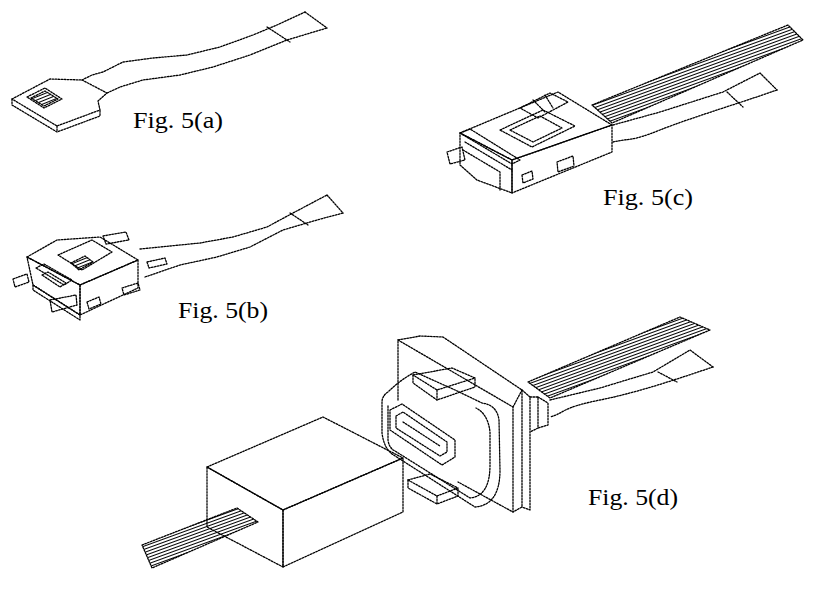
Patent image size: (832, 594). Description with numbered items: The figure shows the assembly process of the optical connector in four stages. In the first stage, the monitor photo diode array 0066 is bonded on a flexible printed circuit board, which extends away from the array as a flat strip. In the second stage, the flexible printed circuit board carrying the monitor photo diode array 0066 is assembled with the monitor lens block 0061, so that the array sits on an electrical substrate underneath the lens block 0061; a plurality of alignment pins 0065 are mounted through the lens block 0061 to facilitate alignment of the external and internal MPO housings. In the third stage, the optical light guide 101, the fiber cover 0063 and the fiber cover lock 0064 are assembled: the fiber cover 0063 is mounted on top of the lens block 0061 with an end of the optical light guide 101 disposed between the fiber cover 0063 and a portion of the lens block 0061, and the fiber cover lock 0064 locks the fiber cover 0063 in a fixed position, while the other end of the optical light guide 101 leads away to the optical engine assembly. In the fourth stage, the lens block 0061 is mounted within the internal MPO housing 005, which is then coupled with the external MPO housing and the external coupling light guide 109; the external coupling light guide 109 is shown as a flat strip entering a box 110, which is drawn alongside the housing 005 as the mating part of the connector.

In FIG. 5A, the monitor photo diode array 0066 is at (40, 103).
In FIG. 5B, the monitor lens block 0061 is at (88, 240).
In FIG. 5B, the alignment pins 0065 is at (60, 297).
In FIG. 5C, the fiber cover lock 0064 is at (557, 112).
In FIG. 5C, the fiber cover 0063 is at (515, 158).
In FIG. 5C, the optical light guide 101 is at (712, 65).
In FIG. 5D, the optical light guide 101 is at (620, 367).
In FIG. 5D, the internal MPO housing 005 is at (515, 463).
In FIG. 5D, the enclosure box 110 is at (353, 517).
In FIG. 5D, the external coupling light guide 109 is at (177, 537).